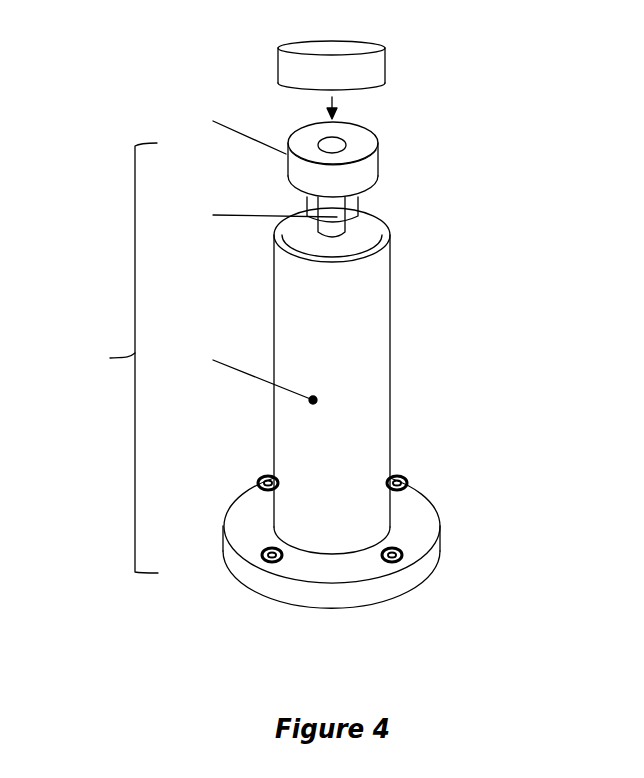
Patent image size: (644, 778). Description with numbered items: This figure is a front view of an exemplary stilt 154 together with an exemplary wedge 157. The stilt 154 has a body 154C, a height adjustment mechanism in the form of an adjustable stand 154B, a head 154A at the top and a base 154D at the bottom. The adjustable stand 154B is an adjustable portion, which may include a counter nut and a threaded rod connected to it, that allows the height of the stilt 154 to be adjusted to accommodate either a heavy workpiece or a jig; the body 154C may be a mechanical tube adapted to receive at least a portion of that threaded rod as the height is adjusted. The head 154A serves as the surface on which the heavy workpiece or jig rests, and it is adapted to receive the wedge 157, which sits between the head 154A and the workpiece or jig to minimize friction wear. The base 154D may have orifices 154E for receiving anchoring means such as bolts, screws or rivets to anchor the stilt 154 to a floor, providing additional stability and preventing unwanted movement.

The wedge 157 is at (385, 65).
The stilt 154 is at (323, 366).
The head 154A is at (343, 182).
The adjustable stand 154B is at (337, 217).
The body 154C is at (370, 358).
The base 154D is at (413, 515).
The mounting holes 154E is at (262, 556).